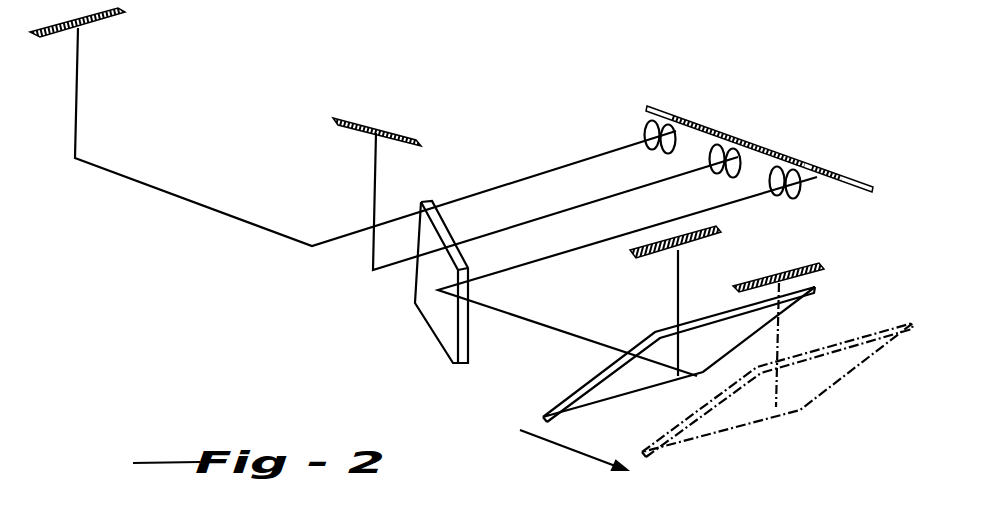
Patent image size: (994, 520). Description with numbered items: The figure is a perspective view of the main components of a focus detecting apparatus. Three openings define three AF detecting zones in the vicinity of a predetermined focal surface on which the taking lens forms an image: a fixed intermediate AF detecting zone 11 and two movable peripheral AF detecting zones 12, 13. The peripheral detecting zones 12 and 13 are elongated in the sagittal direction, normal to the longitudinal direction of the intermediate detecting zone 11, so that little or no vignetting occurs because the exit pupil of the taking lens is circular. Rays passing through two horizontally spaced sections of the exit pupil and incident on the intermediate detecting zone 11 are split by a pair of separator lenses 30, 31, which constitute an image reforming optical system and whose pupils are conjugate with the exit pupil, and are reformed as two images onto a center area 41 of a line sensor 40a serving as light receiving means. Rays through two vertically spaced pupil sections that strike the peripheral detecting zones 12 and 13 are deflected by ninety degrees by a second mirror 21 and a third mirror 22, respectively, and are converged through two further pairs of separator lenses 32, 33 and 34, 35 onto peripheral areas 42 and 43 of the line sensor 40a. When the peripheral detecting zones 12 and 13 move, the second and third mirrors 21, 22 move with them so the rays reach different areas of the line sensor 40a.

The intermediate AF detecting zone 11 is at (380, 126).
The peripheral AF detecting zone 12 is at (115, 17).
The peripheral AF detecting zone 13 is at (720, 228).
The second mirror 21 is at (597, 400).
The third mirror 22 is at (461, 366).
The separator lens 30 is at (720, 145).
The separator lens 31 is at (737, 150).
The separator lens 32 is at (670, 126).
The separator lens 33 is at (652, 120).
The separator lens 34 is at (778, 195).
The separator lens 35 is at (802, 192).
The line sensor 40a is at (860, 183).
The center area 41 is at (777, 155).
The peripheral area 42 is at (708, 126).
The peripheral area 43 is at (822, 172).